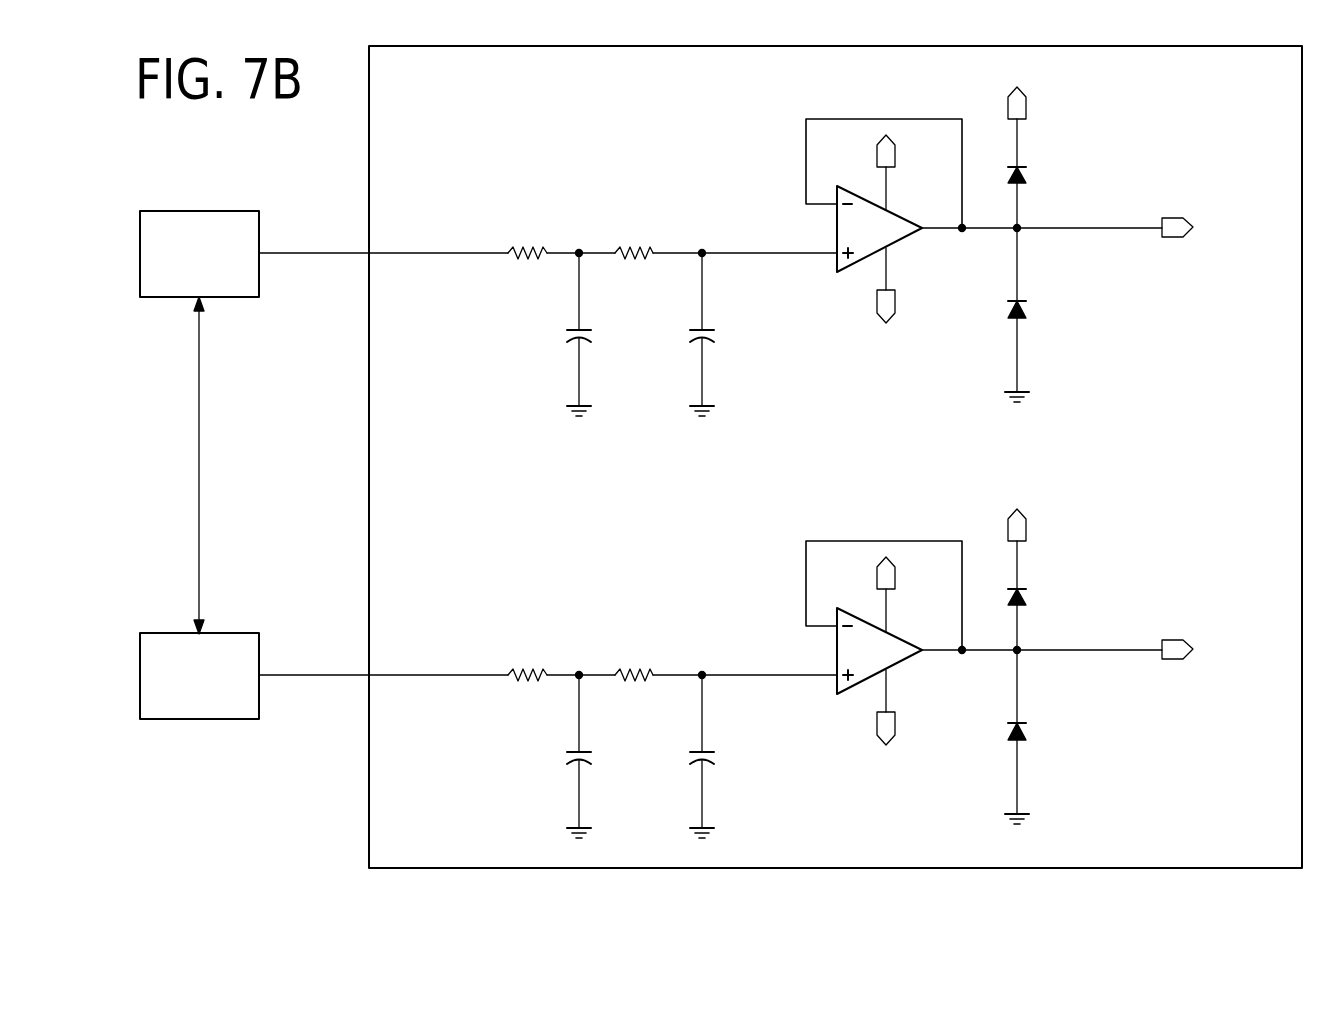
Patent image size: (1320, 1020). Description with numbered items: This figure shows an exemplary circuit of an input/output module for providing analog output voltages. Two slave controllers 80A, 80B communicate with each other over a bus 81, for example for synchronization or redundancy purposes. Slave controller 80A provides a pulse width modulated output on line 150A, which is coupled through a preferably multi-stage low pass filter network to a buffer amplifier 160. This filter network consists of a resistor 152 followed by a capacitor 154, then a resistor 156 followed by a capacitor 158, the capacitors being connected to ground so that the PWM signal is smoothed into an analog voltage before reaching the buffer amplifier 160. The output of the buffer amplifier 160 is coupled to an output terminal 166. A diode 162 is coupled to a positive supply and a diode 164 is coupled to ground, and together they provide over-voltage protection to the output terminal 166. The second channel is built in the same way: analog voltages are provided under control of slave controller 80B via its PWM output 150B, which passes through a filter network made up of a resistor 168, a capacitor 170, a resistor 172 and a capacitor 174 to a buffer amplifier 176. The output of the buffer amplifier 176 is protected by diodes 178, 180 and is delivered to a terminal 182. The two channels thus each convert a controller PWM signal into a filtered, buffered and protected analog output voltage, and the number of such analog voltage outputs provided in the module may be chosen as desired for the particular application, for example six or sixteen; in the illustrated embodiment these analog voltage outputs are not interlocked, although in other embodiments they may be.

The slave controller 80A is at (234, 211).
The slave controller 80B is at (229, 651).
The bus 81 is at (199, 427).
The line 150A is at (433, 253).
The PWM output 150B is at (383, 634).
The resistor 152 is at (535, 248).
The capacitor 154 is at (584, 330).
The resistor 156 is at (641, 248).
The capacitor 158 is at (706, 330).
The buffer amplifier 160 is at (835, 264).
The diode 162 is at (1028, 171).
The diode 164 is at (1028, 305).
The output terminal 166 is at (1178, 240).
The resistor 168 is at (530, 642).
The capacitor 170 is at (605, 756).
The resistor 172 is at (637, 642).
The capacitor 174 is at (728, 756).
The buffer amplifier 176 is at (832, 644).
The diode 178 is at (1059, 598).
The diode 180 is at (1059, 735).
The terminal 182 is at (1178, 695).